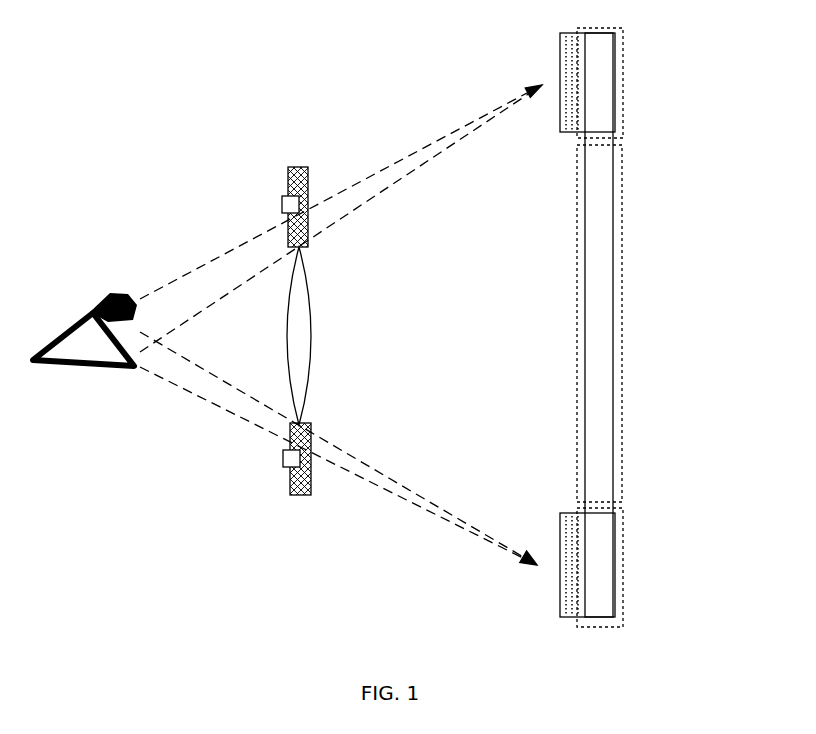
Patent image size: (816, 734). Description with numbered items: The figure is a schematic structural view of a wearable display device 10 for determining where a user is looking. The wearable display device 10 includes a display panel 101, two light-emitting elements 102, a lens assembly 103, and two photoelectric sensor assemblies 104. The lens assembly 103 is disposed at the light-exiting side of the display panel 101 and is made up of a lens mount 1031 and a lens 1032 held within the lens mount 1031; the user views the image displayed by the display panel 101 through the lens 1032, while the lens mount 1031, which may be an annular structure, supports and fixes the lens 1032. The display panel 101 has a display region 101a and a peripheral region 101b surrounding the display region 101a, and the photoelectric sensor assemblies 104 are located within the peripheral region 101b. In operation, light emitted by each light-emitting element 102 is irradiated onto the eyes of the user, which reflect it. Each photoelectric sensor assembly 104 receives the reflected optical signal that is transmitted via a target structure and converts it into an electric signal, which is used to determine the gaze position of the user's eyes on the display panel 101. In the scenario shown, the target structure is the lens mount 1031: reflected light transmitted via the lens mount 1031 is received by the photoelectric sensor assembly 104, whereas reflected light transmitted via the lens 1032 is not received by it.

The wearable display device 10 is at (126, 188).
The display panel 101 is at (597, 403).
The display region 101a is at (622, 342).
The peripheral region 101b is at (622, 122).
The light-emitting element 102 is at (305, 167).
The lens assembly 103 is at (350, 440).
The lens mount 1031 is at (311, 494).
The lens 1032 is at (300, 372).
The photoelectric sensor assembly 104 is at (568, 73).